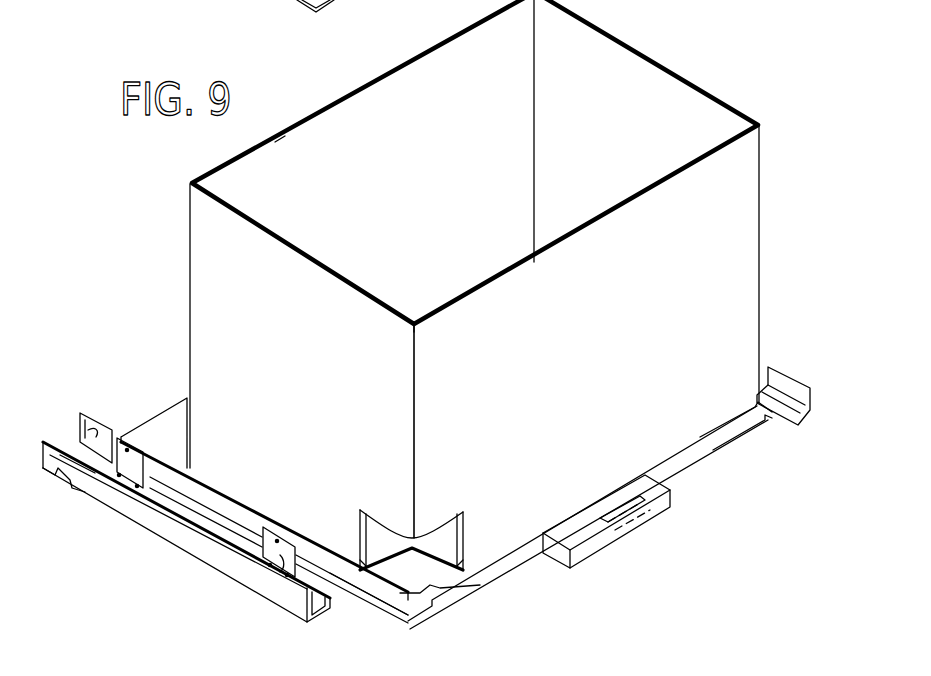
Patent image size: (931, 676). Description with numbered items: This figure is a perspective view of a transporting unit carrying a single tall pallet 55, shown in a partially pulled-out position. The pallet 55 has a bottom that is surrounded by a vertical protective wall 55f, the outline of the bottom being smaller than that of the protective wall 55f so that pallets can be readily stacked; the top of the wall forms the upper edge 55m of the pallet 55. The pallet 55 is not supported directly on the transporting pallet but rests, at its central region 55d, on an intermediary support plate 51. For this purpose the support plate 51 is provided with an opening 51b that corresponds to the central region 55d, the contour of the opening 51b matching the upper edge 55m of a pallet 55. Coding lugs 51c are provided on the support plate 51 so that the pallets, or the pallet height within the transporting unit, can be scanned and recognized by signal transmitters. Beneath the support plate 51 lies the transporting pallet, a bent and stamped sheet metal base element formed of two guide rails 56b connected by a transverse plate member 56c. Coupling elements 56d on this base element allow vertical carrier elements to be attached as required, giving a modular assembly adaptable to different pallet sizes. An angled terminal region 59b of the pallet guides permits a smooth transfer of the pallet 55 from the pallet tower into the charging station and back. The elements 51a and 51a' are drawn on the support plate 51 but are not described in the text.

The pallet 55 is at (645, 48).
The protective wall 55f is at (460, 157).
The upper edge 55m is at (278, 143).
The central region 55d is at (464, 547).
The transverse plate member 56c is at (163, 432).
The guide rails 56b is at (207, 552).
The coupling elements 56d is at (127, 463).
The angled terminal region 59b is at (78, 415).
The support plate 51 is at (445, 598).
The stop block 51a is at (617, 534).
The slot in stop block 51a' is at (690, 525).
The opening 51b is at (413, 575).
The coding lugs 51c is at (785, 383).